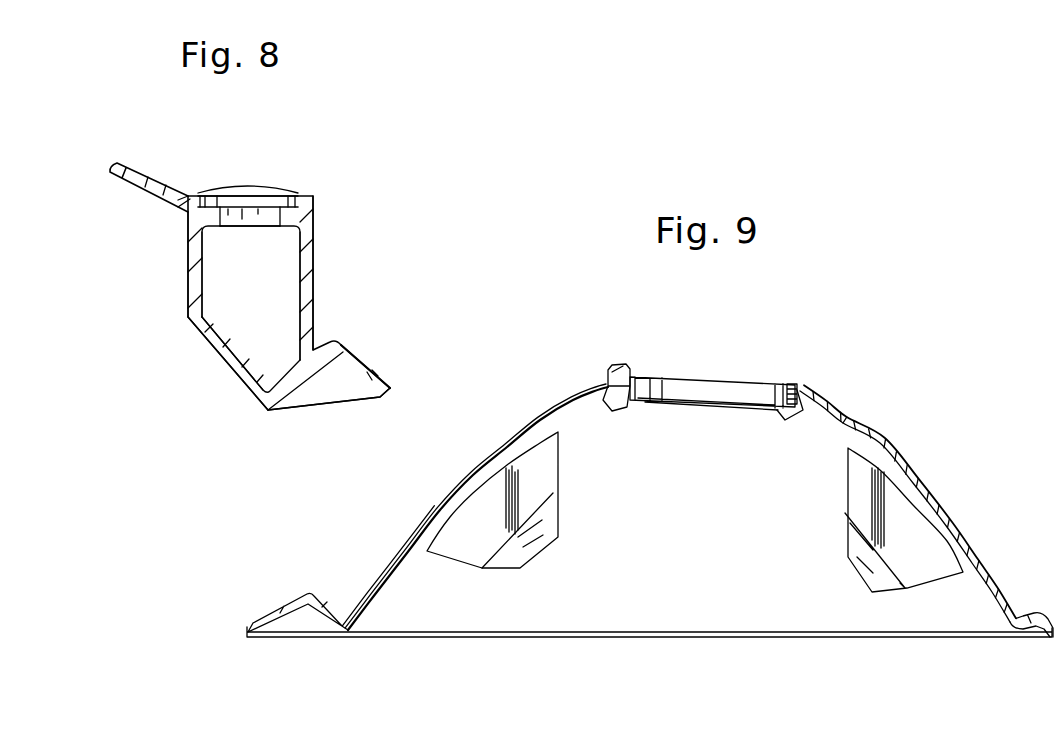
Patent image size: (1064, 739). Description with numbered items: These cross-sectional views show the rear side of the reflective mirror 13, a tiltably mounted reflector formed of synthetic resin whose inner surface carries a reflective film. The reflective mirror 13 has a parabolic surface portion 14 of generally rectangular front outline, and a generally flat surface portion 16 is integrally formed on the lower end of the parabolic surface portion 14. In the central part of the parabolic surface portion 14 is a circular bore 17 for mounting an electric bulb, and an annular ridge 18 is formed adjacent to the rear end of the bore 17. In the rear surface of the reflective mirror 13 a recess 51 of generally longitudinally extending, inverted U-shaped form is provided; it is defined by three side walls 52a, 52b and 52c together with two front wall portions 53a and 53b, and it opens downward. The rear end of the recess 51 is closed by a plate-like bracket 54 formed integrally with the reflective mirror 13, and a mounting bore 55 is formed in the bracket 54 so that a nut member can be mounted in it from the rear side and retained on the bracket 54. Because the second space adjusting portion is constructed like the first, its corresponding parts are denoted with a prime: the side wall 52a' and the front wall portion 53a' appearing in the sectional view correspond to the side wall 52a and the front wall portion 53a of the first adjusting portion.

In FIG. 8, the reflective mirror 13 is at (112, 178).
In FIG. 9, the reflective mirror 13 is at (885, 421).
In FIG. 8, the parabolic surface portion 14 is at (140, 188).
In FIG. 9, the parabolic surface portion 14 is at (843, 420).
In FIG. 9, the flat surface portion 16 is at (697, 592).
In FIG. 9, the circular bore 17 is at (660, 398).
In FIG. 9, the annular ridge 18 is at (797, 391).
In FIG. 8, the recess 51 is at (298, 311).
In FIG. 9, the side wall 52a is at (876, 520).
In FIG. 9, the side wall 52a' is at (526, 500).
In FIG. 8, the side wall 52b is at (190, 266).
In FIG. 8, the side wall 52c is at (310, 277).
In FIG. 8, the front wall portion 53a is at (208, 363).
In FIG. 9, the front wall portion 53a is at (837, 558).
In FIG. 9, the front wall portion 53a' is at (546, 541).
In FIG. 8, the front wall portion 53b is at (297, 383).
In FIG. 8, the bracket 54 is at (212, 204).
In FIG. 8, the mounting bore 55 is at (275, 205).